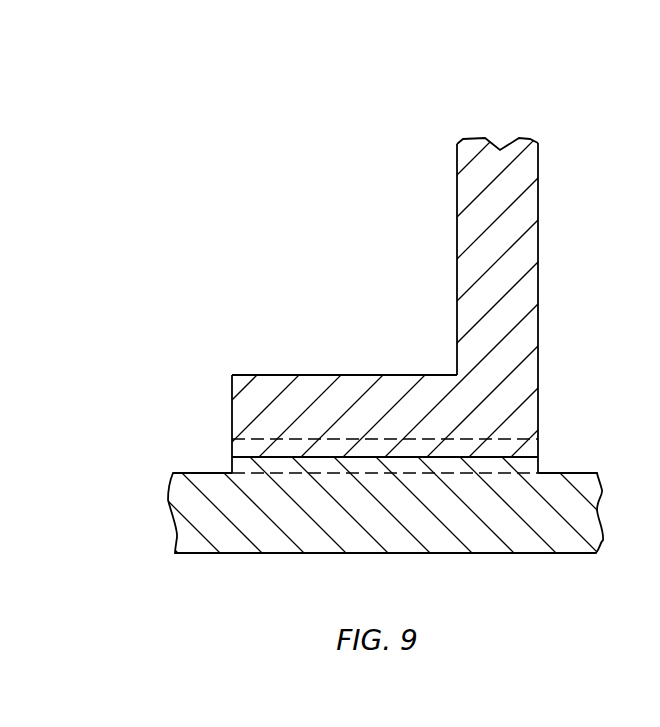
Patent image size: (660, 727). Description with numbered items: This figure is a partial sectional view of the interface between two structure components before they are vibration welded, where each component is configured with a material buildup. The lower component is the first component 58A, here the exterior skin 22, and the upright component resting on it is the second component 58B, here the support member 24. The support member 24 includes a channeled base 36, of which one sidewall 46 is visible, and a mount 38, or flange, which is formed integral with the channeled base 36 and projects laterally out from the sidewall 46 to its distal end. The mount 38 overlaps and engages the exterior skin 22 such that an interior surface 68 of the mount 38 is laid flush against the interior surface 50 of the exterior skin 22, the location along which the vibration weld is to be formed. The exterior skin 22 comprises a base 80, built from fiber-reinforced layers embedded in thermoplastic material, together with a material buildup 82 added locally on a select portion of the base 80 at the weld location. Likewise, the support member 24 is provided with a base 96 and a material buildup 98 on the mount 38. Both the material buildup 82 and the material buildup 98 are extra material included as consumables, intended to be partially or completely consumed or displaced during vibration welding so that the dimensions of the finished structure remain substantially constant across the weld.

The exterior skin 22 is at (337, 510).
The first component 58A is at (337, 510).
The support member 24 is at (534, 96).
The second component 58B is at (545, 122).
The channeled base 36 is at (385, 291).
The mount 38 is at (385, 335).
The sidewall 46 is at (540, 170).
The interior surface 50 is at (346, 471).
The interior surface 68 is at (320, 458).
The base 80 is at (273, 538).
The material buildup 82 is at (252, 465).
The base 96 is at (253, 397).
The material buildup 98 is at (243, 445).